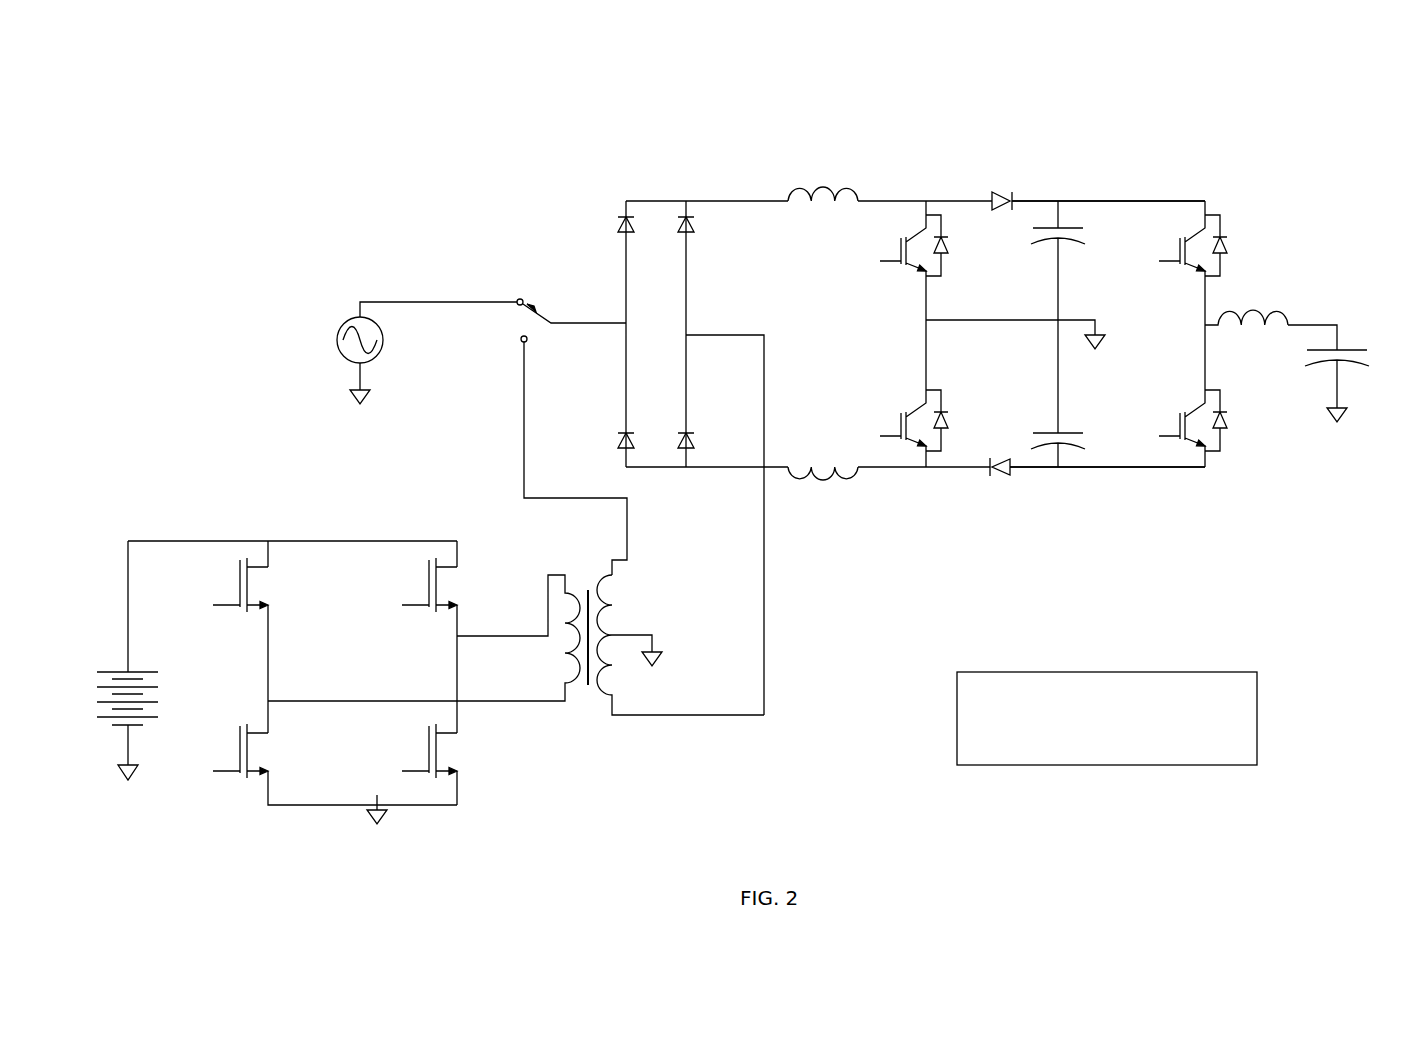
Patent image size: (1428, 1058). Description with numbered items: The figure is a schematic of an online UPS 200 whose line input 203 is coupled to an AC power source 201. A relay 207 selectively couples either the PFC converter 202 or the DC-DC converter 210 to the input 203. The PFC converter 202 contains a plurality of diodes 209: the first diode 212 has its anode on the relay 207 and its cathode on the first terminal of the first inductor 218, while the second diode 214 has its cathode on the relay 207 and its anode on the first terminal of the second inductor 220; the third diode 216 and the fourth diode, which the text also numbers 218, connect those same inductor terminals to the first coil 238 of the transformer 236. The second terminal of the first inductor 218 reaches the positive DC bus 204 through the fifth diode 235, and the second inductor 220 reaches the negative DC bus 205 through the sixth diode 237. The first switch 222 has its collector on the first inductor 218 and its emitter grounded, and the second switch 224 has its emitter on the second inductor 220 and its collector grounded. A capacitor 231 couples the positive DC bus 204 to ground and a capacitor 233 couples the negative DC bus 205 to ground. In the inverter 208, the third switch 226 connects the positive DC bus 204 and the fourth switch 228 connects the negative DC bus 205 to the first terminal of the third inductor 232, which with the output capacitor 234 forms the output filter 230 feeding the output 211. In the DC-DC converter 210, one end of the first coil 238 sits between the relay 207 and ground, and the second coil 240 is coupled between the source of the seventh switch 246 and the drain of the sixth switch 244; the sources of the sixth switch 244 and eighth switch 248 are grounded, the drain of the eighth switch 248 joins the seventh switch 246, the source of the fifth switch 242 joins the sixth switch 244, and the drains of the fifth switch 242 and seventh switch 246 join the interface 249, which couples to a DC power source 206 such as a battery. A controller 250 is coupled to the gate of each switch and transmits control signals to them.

The online UPS 200 is at (245, 108).
The AC power source 201 is at (347, 322).
The PFC converter 202 is at (638, 137).
The line input 203 is at (413, 300).
The positive DC bus 204 is at (1073, 200).
The negative DC bus 205 is at (1073, 468).
The DC power source 206 is at (137, 670).
The relay 207 is at (477, 270).
The inverter 208 is at (1228, 172).
The plurality of diodes 209 is at (742, 295).
The DC-DC converter 210 is at (708, 783).
The output 211 is at (1337, 325).
The first diode (D1) 212 is at (628, 237).
The second diode (D2) 214 is at (626, 447).
The third diode (D3) 216 is at (692, 227).
The first inductor (L1) 218 is at (845, 185).
The second inductor (L2) 220 is at (852, 482).
The first switch (SW1) 222 is at (925, 262).
The second switch (SW2) 224 is at (920, 400).
The third switch (SW3) 226 is at (1195, 262).
The fourth switch (SW4) 228 is at (1193, 405).
The output filter 230 is at (1280, 343).
The capacitor 231 is at (1067, 238).
The third inductor (L3) 232 is at (1277, 310).
The capacitor 233 is at (1068, 432).
The output capacitor 234 is at (1355, 362).
The fifth diode (D5) 235 is at (997, 190).
The transformer 236 is at (563, 568).
The sixth diode (D6) 237 is at (1005, 458).
The first coil 238 is at (598, 597).
The second coil 240 is at (572, 655).
The fifth switch (SW5) 242 is at (242, 583).
The sixth switch (SW6) 244 is at (242, 747).
The seventh switch (SW7) 246 is at (428, 585).
The eighth switch (SW8) 248 is at (428, 747).
The interface 249 is at (188, 540).
The controller 250 is at (1200, 682).